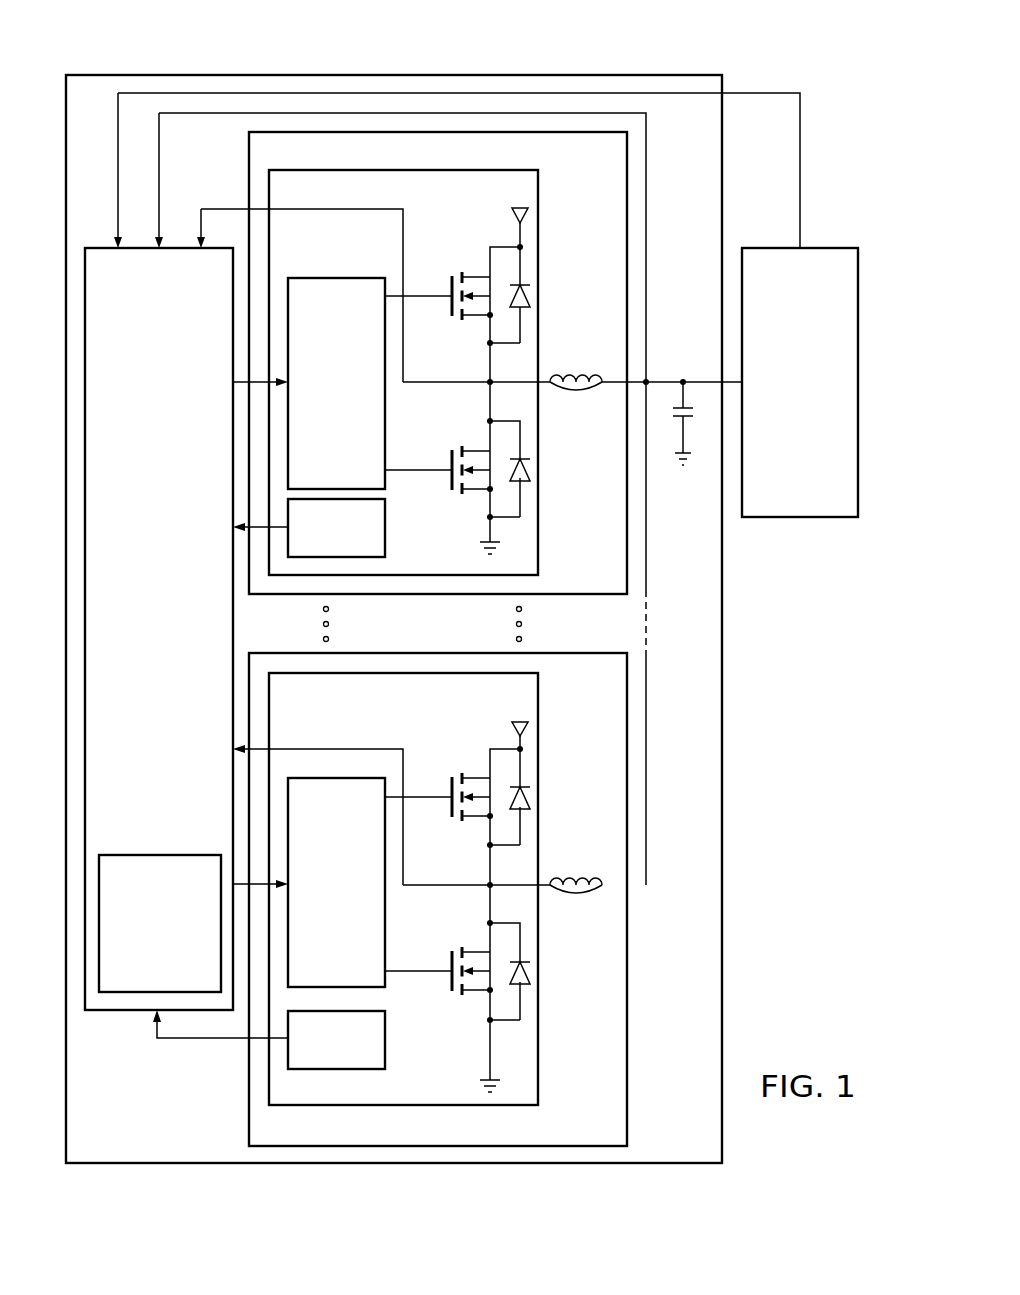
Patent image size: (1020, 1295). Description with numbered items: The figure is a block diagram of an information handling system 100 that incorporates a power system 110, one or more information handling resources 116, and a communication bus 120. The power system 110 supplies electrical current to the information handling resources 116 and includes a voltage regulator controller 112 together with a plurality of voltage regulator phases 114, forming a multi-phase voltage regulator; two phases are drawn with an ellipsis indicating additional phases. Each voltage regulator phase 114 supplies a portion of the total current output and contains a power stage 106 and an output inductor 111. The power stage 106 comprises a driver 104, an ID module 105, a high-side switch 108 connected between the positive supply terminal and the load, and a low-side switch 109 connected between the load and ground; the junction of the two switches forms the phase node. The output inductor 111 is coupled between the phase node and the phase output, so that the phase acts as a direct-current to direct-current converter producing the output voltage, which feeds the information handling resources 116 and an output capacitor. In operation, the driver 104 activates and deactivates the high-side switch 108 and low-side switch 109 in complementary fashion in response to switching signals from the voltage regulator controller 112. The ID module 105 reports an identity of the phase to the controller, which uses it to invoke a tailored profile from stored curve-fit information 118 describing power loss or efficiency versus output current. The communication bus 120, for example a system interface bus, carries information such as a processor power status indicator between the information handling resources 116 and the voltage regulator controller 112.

The information handling system 100 is at (775, 55).
The driver 104 is at (355, 427).
The ID module 105 is at (385, 537).
The power stage 106 is at (551, 206).
The high-side switch 108 is at (452, 312).
The low-side switch 109 is at (450, 450).
The power system 110 is at (133, 1113).
The output inductor 111 is at (588, 392).
The voltage regulator controller 112 is at (176, 613).
The voltage regulator phase 114 is at (238, 169).
The information handling resources 116 is at (782, 438).
The curve-fit information 118 is at (179, 963).
The communication bus 120 is at (800, 180).